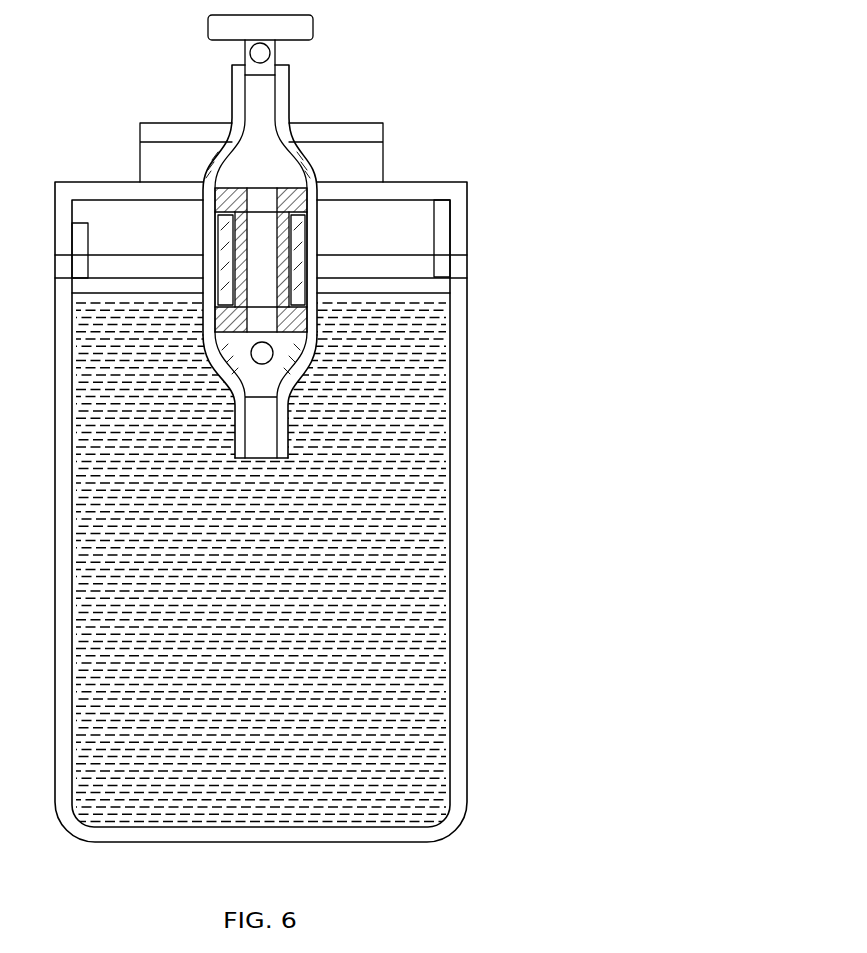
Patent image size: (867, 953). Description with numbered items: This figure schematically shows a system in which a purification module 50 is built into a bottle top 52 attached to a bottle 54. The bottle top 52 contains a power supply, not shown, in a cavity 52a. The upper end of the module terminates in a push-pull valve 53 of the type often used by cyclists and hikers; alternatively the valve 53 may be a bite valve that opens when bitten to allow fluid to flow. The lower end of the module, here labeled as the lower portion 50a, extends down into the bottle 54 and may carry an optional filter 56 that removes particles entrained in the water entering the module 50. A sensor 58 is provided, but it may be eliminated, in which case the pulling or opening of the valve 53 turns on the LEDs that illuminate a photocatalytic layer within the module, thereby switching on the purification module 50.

The purification module 50 is at (322, 313).
The outlet tube of filter cartridge 50a is at (292, 400).
The bottle top 52 is at (447, 223).
The cavity 52a is at (408, 212).
The push-pull valve 53 is at (315, 22).
The bottle 54 is at (450, 540).
The filter 56 is at (260, 453).
The sensor 58 is at (250, 355).